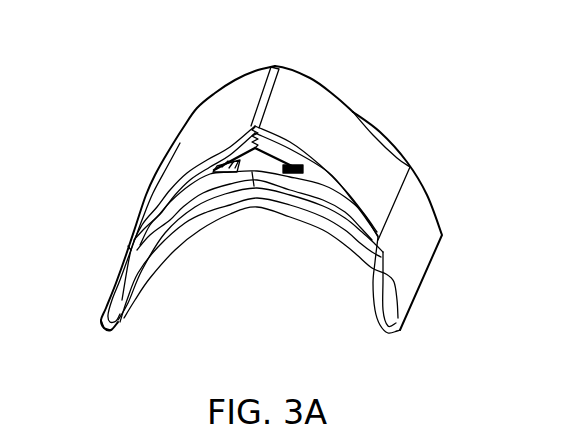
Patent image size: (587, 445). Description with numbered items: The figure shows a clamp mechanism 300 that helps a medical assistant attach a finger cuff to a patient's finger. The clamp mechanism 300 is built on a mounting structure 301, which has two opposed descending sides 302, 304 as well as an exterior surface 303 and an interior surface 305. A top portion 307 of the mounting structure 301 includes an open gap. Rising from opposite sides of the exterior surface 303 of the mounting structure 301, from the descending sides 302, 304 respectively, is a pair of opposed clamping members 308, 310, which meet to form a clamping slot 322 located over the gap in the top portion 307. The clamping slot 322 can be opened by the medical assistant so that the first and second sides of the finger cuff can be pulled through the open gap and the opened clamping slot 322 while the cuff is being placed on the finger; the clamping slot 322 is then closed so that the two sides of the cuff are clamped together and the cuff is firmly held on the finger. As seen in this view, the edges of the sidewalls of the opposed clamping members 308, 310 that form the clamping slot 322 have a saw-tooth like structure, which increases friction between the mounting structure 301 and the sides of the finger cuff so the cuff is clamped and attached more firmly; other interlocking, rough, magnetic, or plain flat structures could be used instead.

The clamp mechanism 300 is at (147, 118).
The mounting structure 301 is at (388, 133).
The descending side 302 is at (417, 208).
The exterior surface 303 is at (340, 208).
The descending side 304 is at (122, 254).
The interior surface 305 is at (135, 280).
The top portion 307 is at (260, 200).
The clamping member 308 is at (321, 110).
The clamping member 310 is at (245, 100).
The clamping slot 322 is at (284, 60).